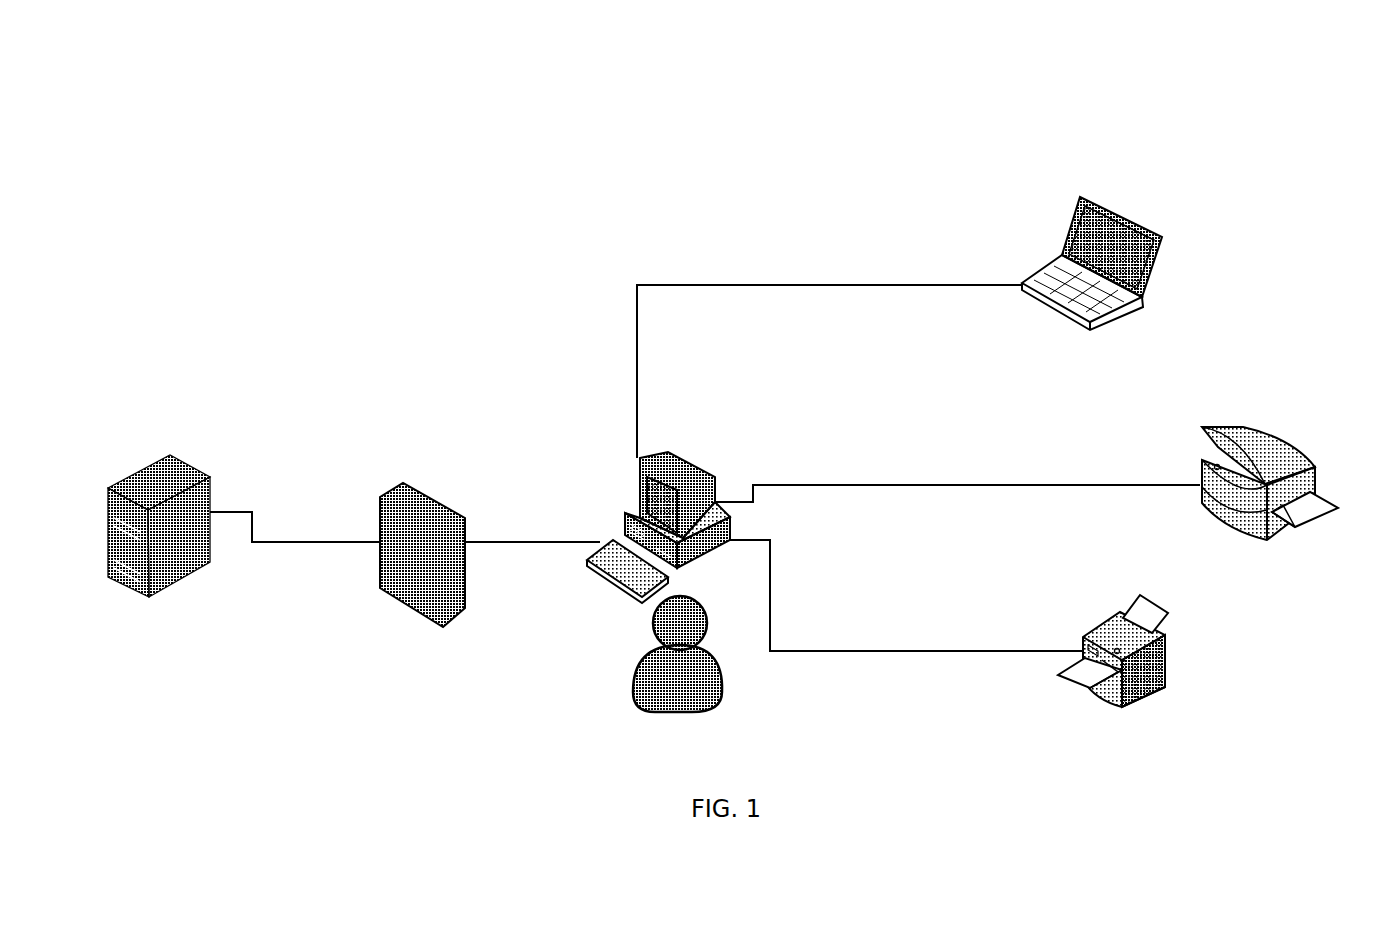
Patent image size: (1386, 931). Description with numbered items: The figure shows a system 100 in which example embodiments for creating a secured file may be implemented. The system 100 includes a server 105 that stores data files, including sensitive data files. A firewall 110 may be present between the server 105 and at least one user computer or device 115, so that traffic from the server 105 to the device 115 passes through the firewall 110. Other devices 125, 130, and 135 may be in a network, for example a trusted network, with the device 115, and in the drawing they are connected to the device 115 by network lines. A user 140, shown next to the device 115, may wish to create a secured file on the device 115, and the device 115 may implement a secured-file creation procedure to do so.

The system 100 is at (1028, 148).
The server 105 is at (197, 465).
The firewall 110 is at (450, 510).
The user computer or device 115 is at (697, 462).
The device 125 is at (1120, 210).
The device 130 is at (1293, 448).
The device 135 is at (1172, 650).
The user 140 is at (628, 663).